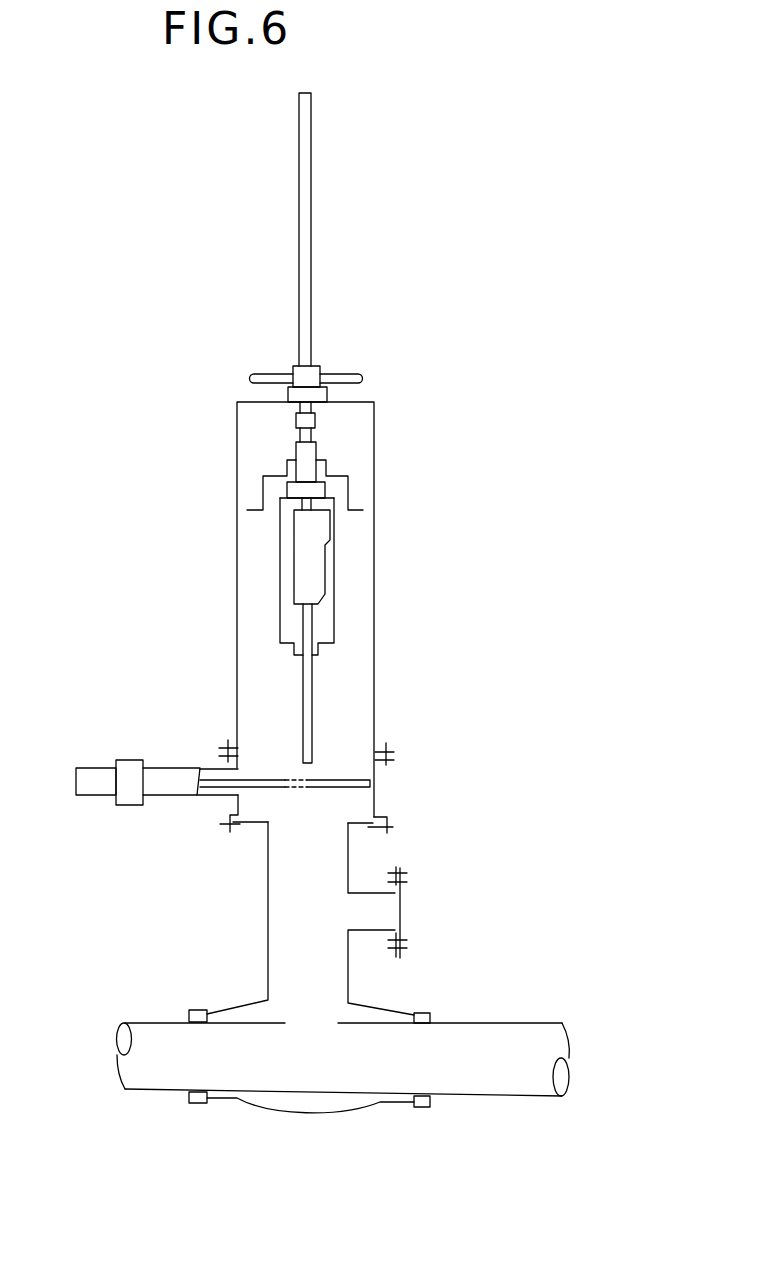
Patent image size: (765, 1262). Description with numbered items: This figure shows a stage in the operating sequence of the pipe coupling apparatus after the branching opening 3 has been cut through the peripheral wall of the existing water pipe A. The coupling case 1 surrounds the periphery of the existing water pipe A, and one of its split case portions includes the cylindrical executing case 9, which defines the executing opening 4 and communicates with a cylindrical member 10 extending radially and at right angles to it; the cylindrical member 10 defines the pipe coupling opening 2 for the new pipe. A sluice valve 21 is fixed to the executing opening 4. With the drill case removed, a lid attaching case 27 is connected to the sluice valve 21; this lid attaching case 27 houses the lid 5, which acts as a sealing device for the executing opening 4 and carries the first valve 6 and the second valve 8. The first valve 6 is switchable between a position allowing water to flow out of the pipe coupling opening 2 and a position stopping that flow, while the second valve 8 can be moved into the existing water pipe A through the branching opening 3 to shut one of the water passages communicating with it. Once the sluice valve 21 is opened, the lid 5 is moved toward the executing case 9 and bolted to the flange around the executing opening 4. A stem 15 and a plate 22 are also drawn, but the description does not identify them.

The coupling case 1 is at (277, 1115).
The pipe coupling opening 2 is at (391, 910).
The branching opening 3 is at (316, 1023).
The executing opening 4 is at (295, 830).
The lid 5 is at (348, 492).
The first valve 6 is at (327, 617).
The second valve 8 is at (312, 561).
The executing case 9 is at (268, 917).
The cylindrical member 10 is at (368, 893).
The stem 15 is at (308, 690).
The sluice valve 21 is at (162, 775).
The gate plate 22 is at (403, 920).
The lid attaching case 27 is at (237, 452).
The existing water pipe A is at (492, 1097).